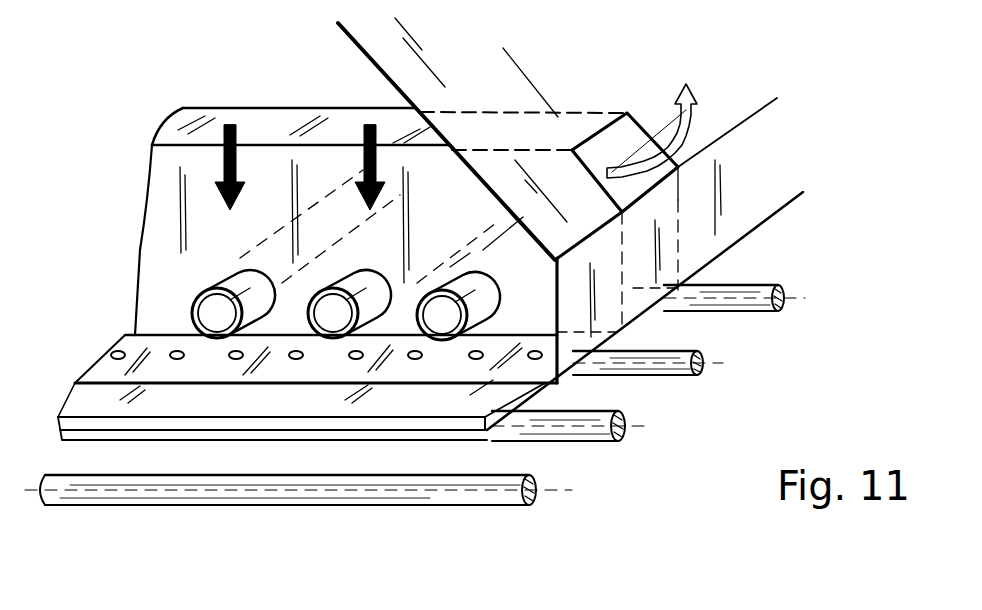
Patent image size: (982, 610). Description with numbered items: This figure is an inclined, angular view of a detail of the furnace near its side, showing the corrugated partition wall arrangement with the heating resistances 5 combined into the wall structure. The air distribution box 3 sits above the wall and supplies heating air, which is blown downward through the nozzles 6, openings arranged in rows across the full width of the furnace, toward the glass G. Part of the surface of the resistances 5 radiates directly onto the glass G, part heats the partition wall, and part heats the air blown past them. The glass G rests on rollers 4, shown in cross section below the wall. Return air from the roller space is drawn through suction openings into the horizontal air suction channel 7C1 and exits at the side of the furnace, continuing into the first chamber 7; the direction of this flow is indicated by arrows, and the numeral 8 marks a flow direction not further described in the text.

The air distribution box 3 is at (335, 90).
The first chamber 7 is at (737, 115).
The air suction channel 7C1 is at (595, 157).
The base plate / sliding direction 8 is at (762, 258).
The heating resistance 5 is at (210, 307).
The nozzle 6 is at (106, 354).
The glass G is at (410, 400).
The roller 4 is at (668, 372).